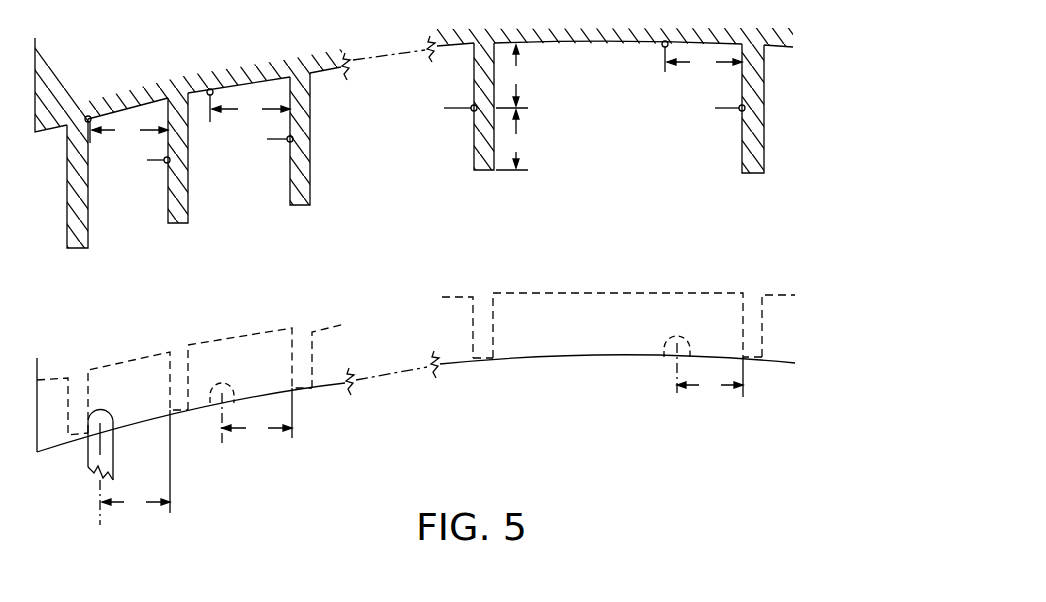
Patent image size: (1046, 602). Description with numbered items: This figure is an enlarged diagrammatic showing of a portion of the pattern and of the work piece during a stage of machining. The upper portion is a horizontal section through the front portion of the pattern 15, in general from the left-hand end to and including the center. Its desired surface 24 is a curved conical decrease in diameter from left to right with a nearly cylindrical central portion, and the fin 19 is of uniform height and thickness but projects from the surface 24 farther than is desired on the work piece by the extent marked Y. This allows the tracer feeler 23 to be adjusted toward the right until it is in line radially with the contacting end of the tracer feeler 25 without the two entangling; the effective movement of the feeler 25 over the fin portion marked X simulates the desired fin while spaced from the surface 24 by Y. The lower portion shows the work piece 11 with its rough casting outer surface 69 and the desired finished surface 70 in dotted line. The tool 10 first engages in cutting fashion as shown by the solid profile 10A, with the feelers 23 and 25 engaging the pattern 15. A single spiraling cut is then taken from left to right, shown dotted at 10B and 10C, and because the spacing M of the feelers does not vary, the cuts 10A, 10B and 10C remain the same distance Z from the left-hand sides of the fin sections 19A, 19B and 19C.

The pattern 15 is at (156, 70).
The desired surface 24 is at (57, 131).
The tracer feeler 23 is at (90, 143).
The tracer feeler 25 is at (147, 160).
The fin 19 is at (310, 187).
The work piece 11 is at (383, 342).
The rough casting outer surface 69 is at (567, 358).
The desired finished surface 70 is at (523, 293).
The fin section 19A is at (178, 353).
The fin section 19B is at (300, 330).
The fin section 19C is at (753, 302).
The tool 10 is at (115, 455).
The solid profile 10A is at (103, 411).
The cut 10B is at (227, 383).
The cut 10C is at (678, 336).